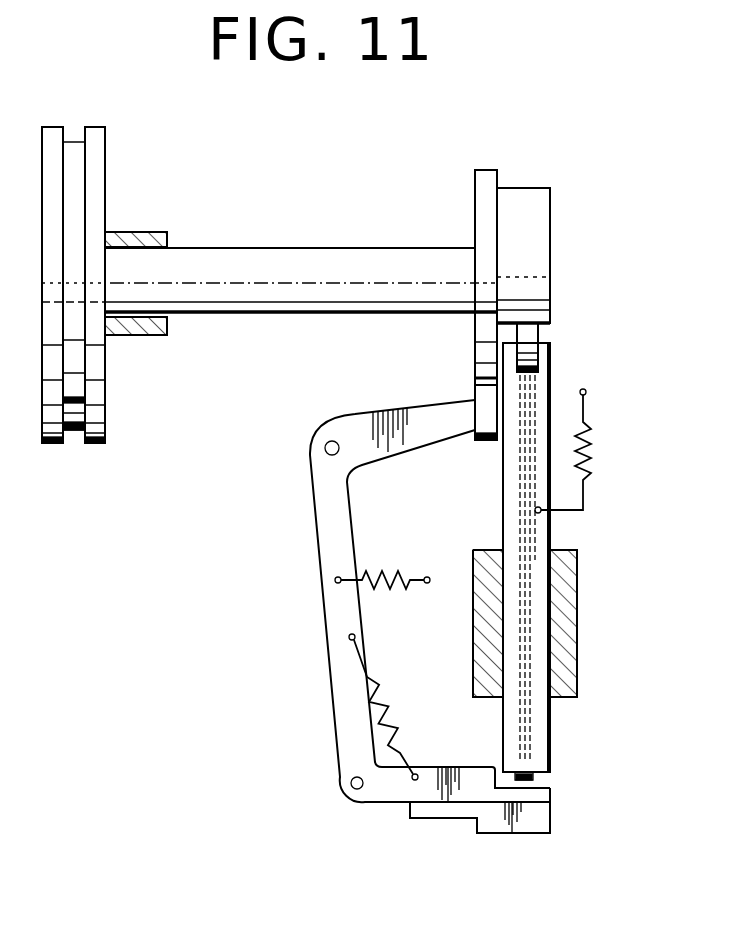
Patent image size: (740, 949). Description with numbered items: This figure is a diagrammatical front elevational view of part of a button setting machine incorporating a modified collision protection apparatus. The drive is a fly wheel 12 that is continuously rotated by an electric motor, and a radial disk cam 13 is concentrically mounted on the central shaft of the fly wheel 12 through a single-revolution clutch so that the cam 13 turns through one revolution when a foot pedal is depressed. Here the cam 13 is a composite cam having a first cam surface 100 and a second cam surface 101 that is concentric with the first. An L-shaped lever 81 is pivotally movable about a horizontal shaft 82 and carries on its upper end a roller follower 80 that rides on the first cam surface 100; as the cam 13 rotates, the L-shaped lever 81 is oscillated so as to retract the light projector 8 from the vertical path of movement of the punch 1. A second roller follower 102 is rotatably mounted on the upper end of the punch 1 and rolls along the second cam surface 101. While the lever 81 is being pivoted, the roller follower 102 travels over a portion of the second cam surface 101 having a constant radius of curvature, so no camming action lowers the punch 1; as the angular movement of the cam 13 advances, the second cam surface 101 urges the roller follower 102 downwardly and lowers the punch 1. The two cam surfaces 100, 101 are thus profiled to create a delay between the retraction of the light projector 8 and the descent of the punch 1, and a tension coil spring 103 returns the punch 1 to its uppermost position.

The punch 1 is at (538, 738).
The light projector 8 is at (537, 822).
The fly wheel 12 is at (103, 143).
The radial disk cam 13 is at (540, 225).
The roller follower 80 is at (487, 441).
The L-shaped lever 81 is at (327, 615).
The horizontal shaft 82 is at (312, 449).
The first cam surface 100 is at (483, 170).
The second cam surface 101 is at (530, 187).
The roller follower 102 is at (528, 335).
The tension coil spring 103 is at (592, 460).